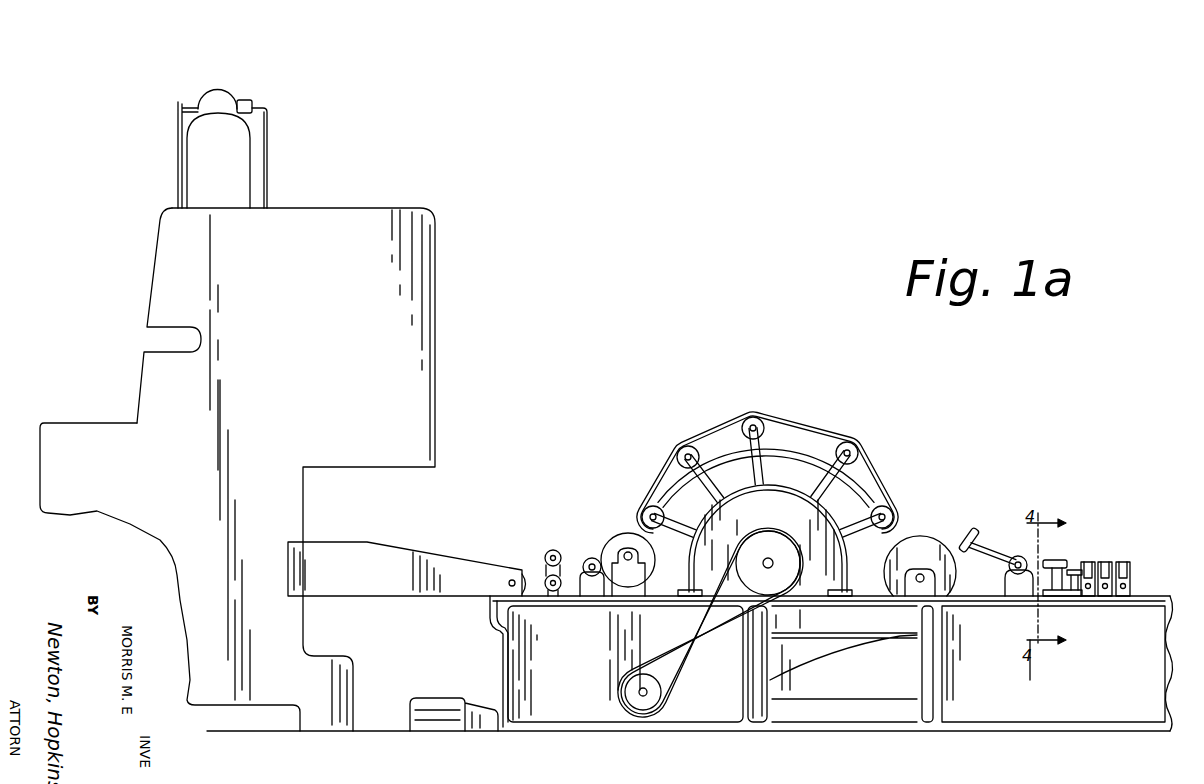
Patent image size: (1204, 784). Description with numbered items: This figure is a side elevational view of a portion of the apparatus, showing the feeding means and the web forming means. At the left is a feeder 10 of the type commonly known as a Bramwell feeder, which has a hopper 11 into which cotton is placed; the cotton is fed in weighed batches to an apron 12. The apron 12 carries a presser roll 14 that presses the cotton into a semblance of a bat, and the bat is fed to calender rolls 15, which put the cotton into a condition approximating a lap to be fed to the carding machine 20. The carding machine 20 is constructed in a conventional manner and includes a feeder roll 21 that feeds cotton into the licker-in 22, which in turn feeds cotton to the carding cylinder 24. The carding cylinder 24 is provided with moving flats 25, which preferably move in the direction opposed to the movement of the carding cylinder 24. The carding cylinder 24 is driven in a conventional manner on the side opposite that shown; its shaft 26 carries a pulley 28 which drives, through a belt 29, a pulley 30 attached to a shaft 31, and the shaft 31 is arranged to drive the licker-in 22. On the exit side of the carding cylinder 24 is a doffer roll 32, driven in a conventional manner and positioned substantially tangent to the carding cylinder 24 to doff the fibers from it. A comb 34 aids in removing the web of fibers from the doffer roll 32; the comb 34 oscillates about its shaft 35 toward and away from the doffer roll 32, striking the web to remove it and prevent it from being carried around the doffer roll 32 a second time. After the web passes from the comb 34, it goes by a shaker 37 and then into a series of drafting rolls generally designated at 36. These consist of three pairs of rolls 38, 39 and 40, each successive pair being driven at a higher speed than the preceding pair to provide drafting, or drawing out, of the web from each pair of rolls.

The feeder 10 is at (438, 236).
The hopper 11 is at (103, 422).
The apron 12 is at (469, 559).
The presser roll 14 is at (524, 572).
The calender rolls 15 is at (551, 553).
The carding machine 20 is at (767, 466).
The feeder roll 21 is at (586, 558).
The licker-in 22 is at (611, 549).
The carding cylinder 24 is at (668, 499).
The moving flats 25 is at (703, 440).
The shaft 26 is at (771, 558).
The pulley 28 is at (772, 534).
The belt 29 is at (681, 645).
The pulley 30 is at (657, 692).
The shaft 31 is at (630, 692).
The doffer roll 32 is at (910, 537).
The comb 34 is at (963, 530).
The shaft 35 is at (1018, 579).
The drafting rolls 36 is at (1101, 579).
The shaker 37 is at (1062, 561).
The pair of rolls 38 is at (1090, 590).
The pair of rolls 39 is at (1107, 590).
The pair of rolls 40 is at (1123, 590).